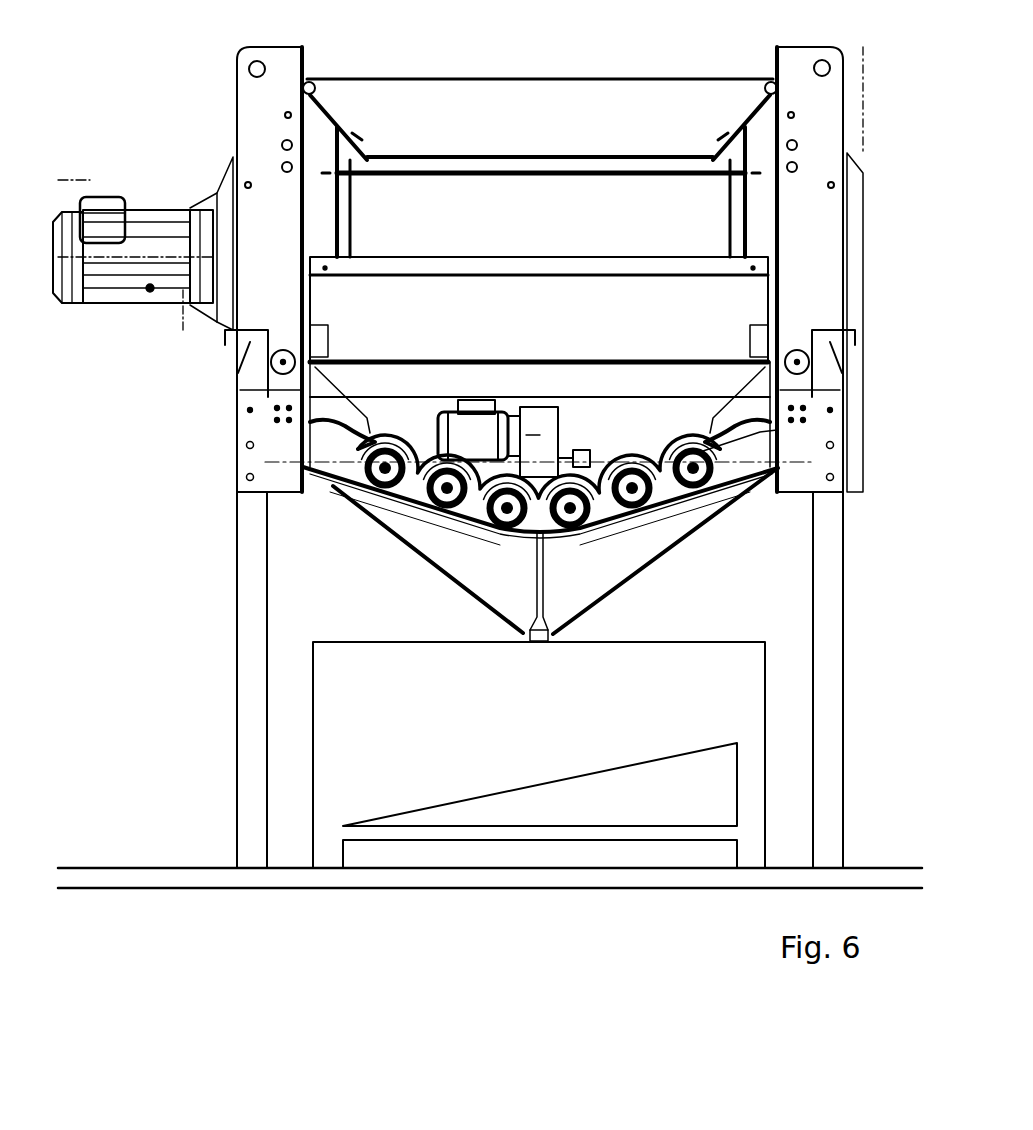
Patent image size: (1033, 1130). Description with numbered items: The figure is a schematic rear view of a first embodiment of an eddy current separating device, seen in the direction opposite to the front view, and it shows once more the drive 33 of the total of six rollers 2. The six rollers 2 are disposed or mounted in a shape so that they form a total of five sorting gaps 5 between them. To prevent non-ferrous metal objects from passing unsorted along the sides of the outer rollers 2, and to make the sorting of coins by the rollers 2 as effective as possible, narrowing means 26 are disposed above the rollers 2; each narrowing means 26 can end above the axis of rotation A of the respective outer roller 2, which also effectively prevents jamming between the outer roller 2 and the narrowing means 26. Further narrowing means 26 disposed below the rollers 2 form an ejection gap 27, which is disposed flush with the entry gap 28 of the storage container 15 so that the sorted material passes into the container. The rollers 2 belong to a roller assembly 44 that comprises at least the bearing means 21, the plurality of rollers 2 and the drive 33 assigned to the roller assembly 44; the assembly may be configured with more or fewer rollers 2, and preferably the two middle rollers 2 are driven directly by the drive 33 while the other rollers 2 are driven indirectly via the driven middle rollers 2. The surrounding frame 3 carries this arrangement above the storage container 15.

The roller 2 is at (624, 457).
The frame 3 is at (690, 203).
The sorting gap 5 is at (575, 533).
The storage container 15 is at (348, 677).
The bearing means 21 is at (742, 447).
The narrowing means 26 is at (340, 392).
The ejection gap 27 is at (545, 622).
The entry gap 28 is at (537, 640).
The drive 33 is at (478, 400).
The roller assembly 44 is at (513, 391).
The axis of rotation A is at (337, 493).